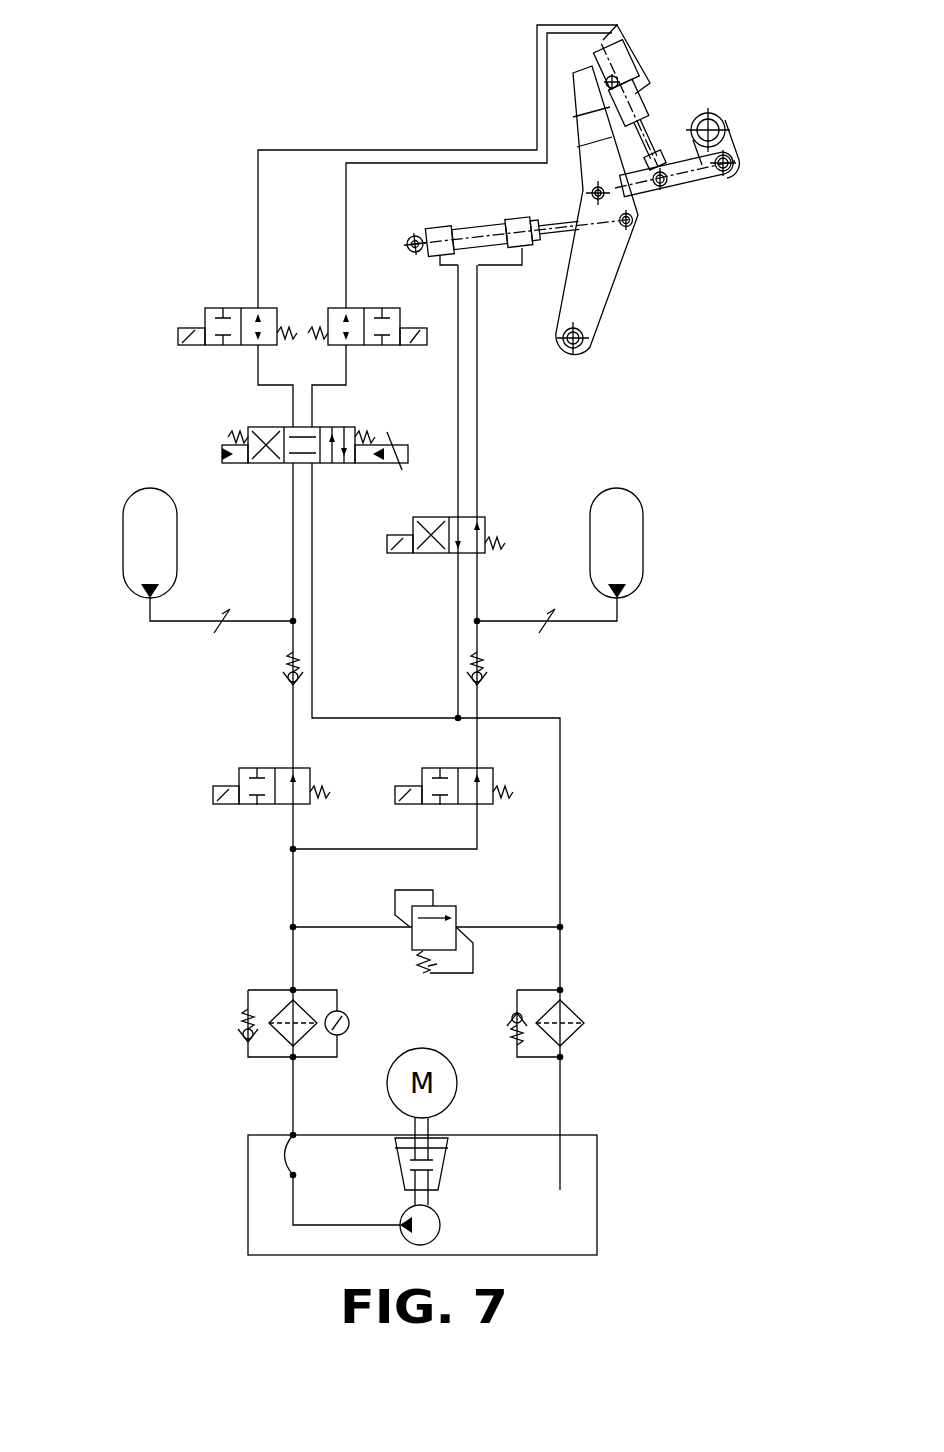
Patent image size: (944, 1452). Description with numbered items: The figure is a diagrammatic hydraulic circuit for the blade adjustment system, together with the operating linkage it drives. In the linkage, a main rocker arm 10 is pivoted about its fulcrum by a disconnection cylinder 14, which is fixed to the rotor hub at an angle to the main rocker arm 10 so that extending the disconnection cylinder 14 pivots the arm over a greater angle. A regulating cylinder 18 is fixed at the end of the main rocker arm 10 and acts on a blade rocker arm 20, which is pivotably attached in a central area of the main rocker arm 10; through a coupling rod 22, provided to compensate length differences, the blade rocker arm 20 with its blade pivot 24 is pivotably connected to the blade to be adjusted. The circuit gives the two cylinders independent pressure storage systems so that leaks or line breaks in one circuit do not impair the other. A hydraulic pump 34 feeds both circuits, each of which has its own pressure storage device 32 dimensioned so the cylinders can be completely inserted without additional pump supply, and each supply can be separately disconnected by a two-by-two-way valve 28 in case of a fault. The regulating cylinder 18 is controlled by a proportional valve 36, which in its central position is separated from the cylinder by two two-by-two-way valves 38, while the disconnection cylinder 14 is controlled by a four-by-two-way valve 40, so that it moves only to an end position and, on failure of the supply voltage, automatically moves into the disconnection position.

The main rocker arm 10 is at (600, 278).
The disconnection cylinder 14 is at (440, 228).
The regulating cylinder 18 is at (640, 37).
The blade rocker arm 20 is at (690, 195).
The coupling rod 22 is at (742, 140).
The blade pivot 24 is at (717, 112).
The valves 28 is at (239, 773).
The pressure storage devices 32 is at (123, 518).
The hydraulic pump 34 is at (438, 1220).
The proportional valve 36 is at (222, 453).
The 2/2-way valves 38 is at (205, 317).
The 4/2-way valve 40 is at (466, 517).